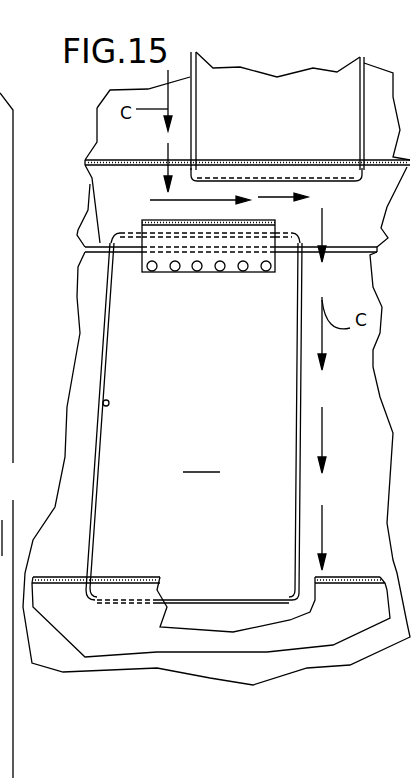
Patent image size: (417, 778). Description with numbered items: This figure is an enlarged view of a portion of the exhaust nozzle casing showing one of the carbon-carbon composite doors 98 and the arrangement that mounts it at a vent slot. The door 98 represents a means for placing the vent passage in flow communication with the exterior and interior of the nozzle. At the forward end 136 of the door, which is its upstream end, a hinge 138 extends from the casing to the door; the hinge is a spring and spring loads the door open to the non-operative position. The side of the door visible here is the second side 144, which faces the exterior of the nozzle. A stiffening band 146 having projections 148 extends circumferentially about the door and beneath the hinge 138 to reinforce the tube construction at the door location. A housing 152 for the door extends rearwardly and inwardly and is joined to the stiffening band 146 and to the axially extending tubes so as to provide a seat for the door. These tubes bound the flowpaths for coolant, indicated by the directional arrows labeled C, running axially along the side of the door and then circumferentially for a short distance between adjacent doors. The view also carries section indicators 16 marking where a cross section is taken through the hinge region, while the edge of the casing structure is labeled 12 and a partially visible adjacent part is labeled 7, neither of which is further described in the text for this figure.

The vehicle body 7 is at (2, 538).
The side wall 12 is at (10, 435).
The section line 16- 16 is at (235, 173).
The door 98 is at (201, 461).
The forward end 136 is at (288, 260).
The hinge 138 is at (188, 258).
The second side 144 is at (170, 382).
The stiffening band 146 is at (112, 164).
The projections 148 is at (153, 165).
The housing 152 is at (103, 404).